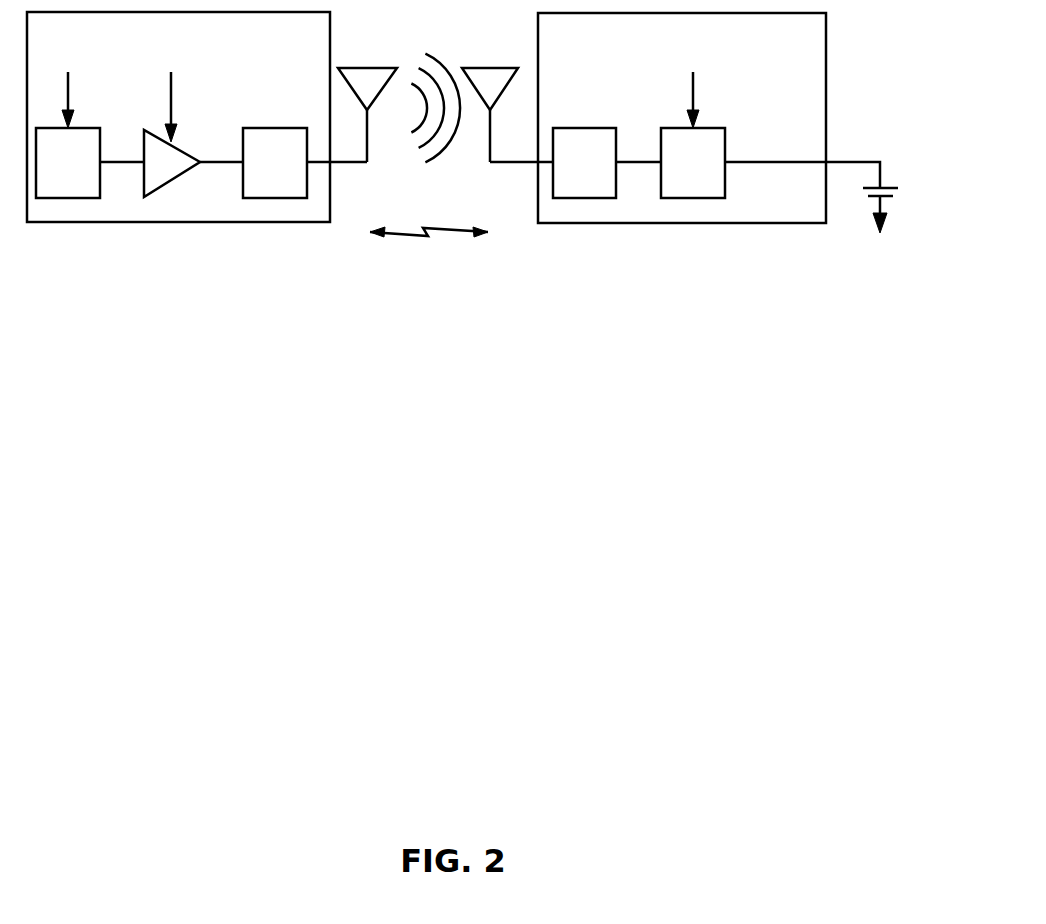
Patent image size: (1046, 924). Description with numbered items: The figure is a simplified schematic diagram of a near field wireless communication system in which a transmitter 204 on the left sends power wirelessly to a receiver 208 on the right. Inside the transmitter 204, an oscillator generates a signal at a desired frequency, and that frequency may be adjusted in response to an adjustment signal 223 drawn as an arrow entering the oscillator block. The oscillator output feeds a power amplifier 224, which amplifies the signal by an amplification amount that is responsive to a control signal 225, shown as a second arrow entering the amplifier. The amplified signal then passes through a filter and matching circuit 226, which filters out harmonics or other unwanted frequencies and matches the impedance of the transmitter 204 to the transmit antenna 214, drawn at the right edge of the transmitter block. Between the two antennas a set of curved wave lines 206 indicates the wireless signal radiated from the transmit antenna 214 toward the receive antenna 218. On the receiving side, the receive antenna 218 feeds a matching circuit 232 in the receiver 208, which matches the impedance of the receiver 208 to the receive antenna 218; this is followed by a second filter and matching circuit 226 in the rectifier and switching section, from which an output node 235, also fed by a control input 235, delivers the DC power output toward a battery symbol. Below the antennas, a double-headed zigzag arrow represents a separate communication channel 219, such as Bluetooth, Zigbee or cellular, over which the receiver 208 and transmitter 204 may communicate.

The transmitter 204 is at (161, 43).
The transmit antenna 214 is at (51, 186).
The adjustment signal 223 is at (68, 84).
The power amplifier 224 is at (146, 171).
The control signal 225 is at (171, 84).
The filter and matching circuit 226 is at (258, 173).
The wireless power signal 206 is at (436, 166).
The receive antenna 218 is at (503, 68).
The communication channel 219 is at (431, 256).
The receiver 208 is at (665, 45).
The matching circuit 232 is at (567, 173).
The rectifier switching signal / output 235 is at (693, 85).